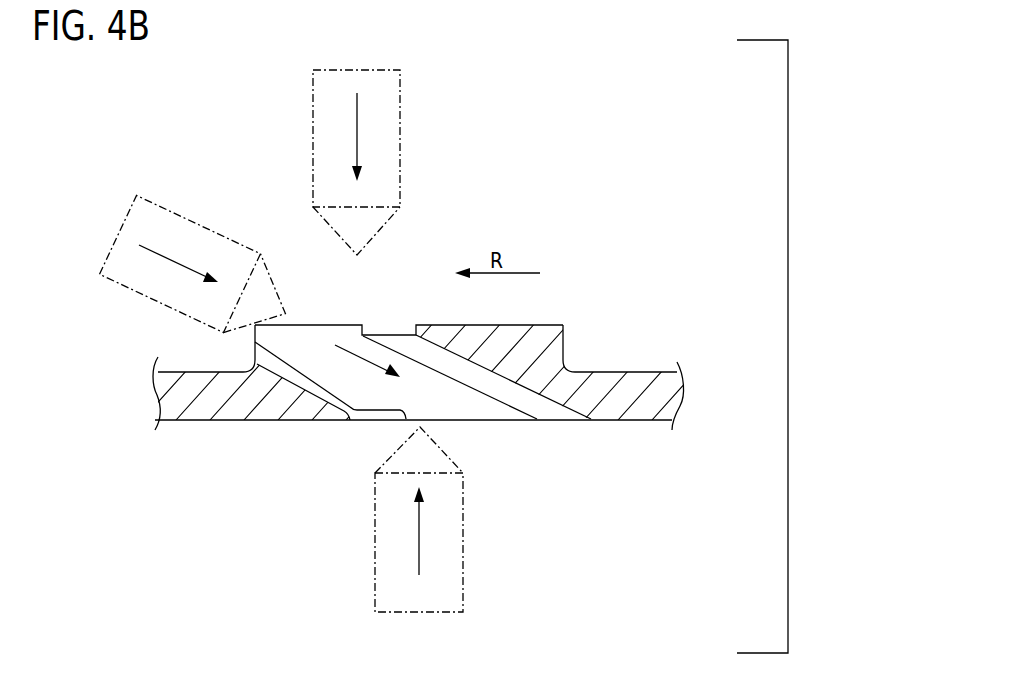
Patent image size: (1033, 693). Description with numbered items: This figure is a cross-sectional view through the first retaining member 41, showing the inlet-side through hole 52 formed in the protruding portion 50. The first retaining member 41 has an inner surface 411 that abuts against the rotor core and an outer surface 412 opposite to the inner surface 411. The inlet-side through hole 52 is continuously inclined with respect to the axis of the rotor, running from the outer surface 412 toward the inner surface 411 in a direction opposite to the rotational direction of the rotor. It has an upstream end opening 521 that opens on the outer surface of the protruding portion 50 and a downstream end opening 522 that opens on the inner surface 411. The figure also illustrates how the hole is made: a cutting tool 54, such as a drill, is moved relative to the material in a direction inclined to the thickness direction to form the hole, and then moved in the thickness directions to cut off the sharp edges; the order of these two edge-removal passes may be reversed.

The first retaining member 41 is at (457, 374).
The inner surface 411 is at (625, 420).
The outer surface 412 is at (543, 325).
The protruding portion 50 is at (423, 374).
The inlet-side through hole 52 is at (447, 407).
The upstream end opening 521 is at (304, 324).
The downstream end opening 522 is at (512, 421).
The cutting tool 54 is at (400, 128).